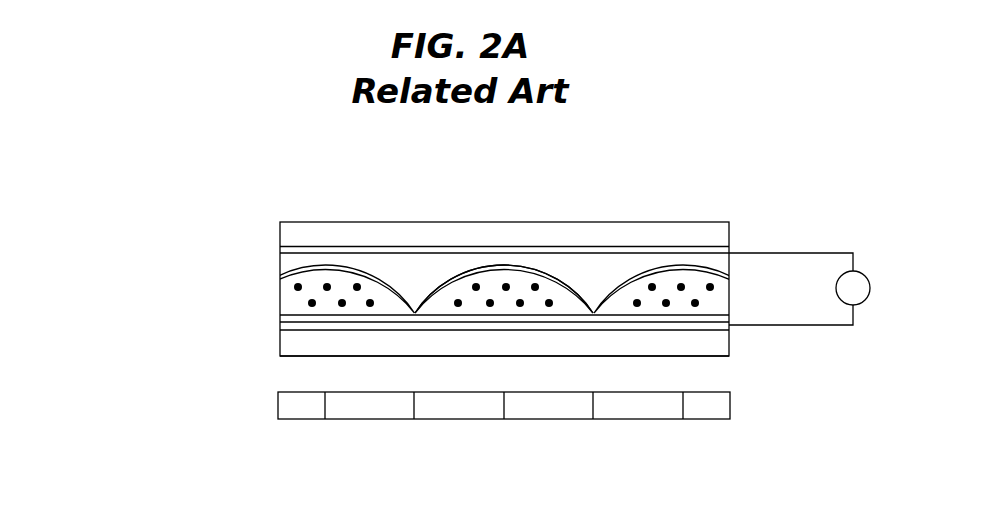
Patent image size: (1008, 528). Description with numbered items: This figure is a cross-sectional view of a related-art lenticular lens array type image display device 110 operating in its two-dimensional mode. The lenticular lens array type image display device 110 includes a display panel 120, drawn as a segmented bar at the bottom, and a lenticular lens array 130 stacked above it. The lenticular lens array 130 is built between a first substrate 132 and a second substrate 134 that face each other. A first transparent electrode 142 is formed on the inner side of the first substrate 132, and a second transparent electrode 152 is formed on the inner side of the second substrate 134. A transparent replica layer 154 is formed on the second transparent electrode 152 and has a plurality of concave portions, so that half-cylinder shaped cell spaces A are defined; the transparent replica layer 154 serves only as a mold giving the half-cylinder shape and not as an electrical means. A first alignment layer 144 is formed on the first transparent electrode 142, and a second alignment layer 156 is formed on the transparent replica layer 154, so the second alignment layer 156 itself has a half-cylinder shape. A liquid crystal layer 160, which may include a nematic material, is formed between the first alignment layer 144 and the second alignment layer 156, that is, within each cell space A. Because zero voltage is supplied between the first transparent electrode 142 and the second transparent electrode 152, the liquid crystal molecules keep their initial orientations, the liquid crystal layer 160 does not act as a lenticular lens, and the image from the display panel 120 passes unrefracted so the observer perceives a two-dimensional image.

The lenticular lens array type image display device 110 is at (130, 292).
The display panel 120 is at (260, 408).
The lenticular lens array 130 is at (243, 287).
The first substrate 132 is at (283, 346).
The second substrate 134 is at (283, 231).
The first transparent electrode 142 is at (729, 327).
The first alignment layer 144 is at (729, 316).
The second transparent electrode 152 is at (562, 247).
The transparent replica layer 154 is at (615, 267).
The second alignment layer 156 is at (683, 267).
The liquid crystal layer 160 is at (357, 285).
The cell space A is at (497, 268).